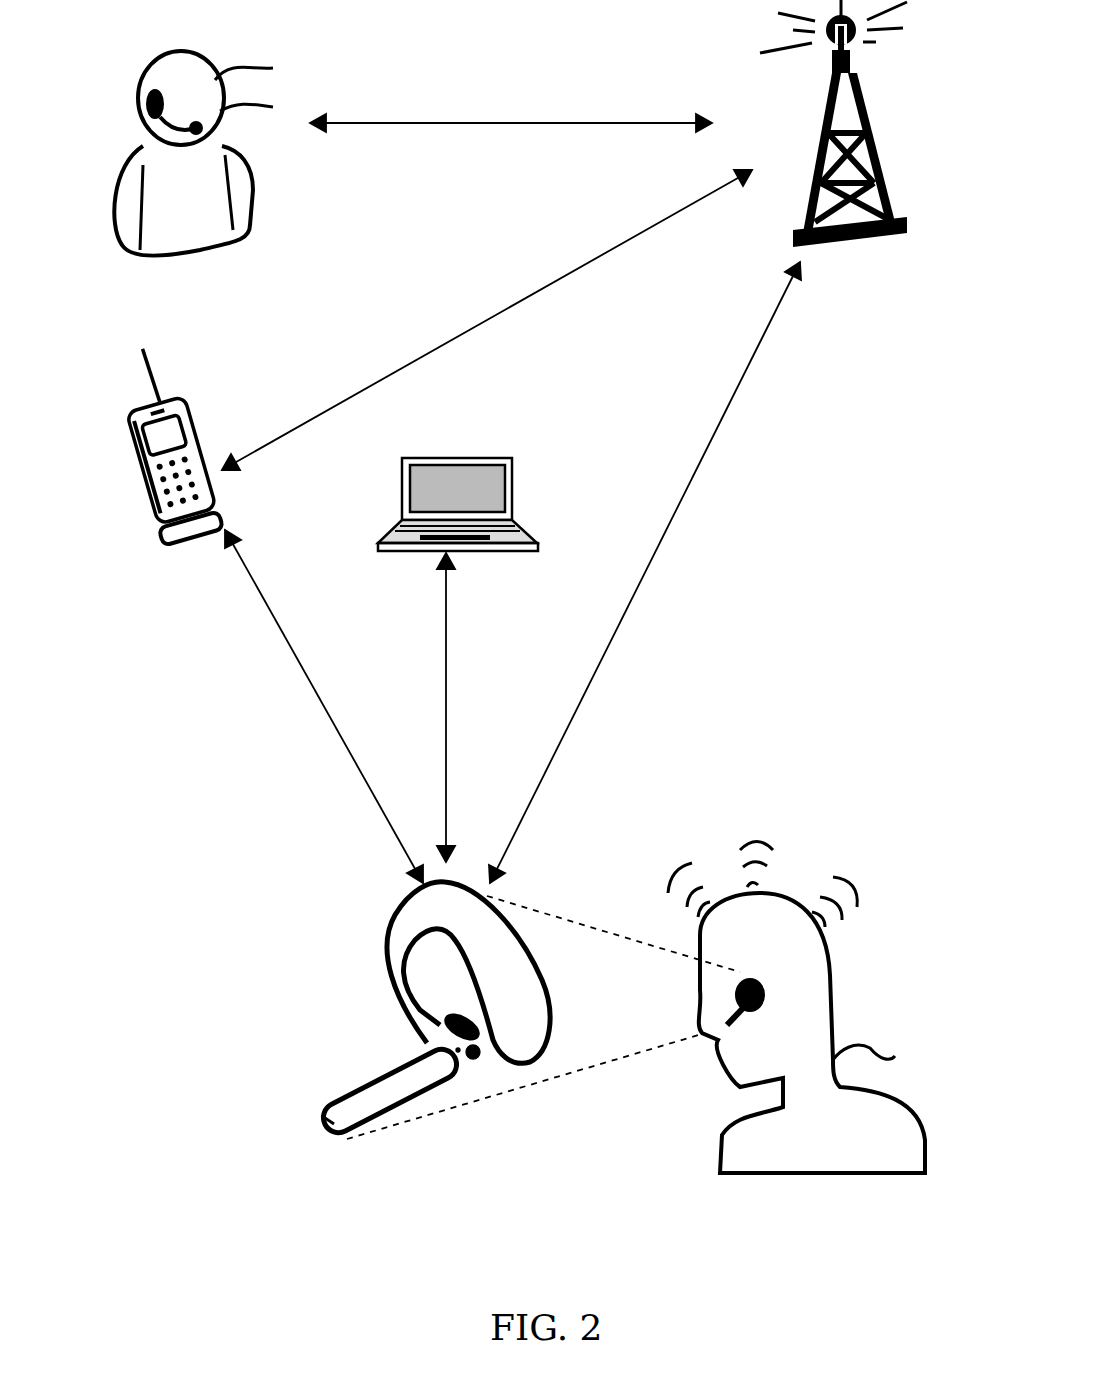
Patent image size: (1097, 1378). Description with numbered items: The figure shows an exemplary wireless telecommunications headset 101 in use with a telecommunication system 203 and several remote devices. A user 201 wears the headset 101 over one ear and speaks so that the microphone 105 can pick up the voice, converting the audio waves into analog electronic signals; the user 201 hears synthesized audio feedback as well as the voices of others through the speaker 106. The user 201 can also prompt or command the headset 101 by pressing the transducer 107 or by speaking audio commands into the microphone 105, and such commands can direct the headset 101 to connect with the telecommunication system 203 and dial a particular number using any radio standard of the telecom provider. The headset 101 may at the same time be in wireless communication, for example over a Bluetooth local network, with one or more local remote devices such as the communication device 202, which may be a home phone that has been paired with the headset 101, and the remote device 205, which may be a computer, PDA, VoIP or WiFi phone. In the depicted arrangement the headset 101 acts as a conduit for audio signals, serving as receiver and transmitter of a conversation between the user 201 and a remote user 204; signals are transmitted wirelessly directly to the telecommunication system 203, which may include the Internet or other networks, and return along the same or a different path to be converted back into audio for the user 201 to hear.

The wireless telecommunications headset 101 is at (494, 994).
The microphone 105 is at (328, 1116).
The speaker 106 is at (440, 1053).
The transducer 107 is at (480, 1068).
The user 201 is at (862, 1060).
The communication device 202 is at (158, 565).
The telecommunication system 203 is at (740, 115).
The remote user 204 is at (223, 151).
The remote device 205 is at (460, 482).